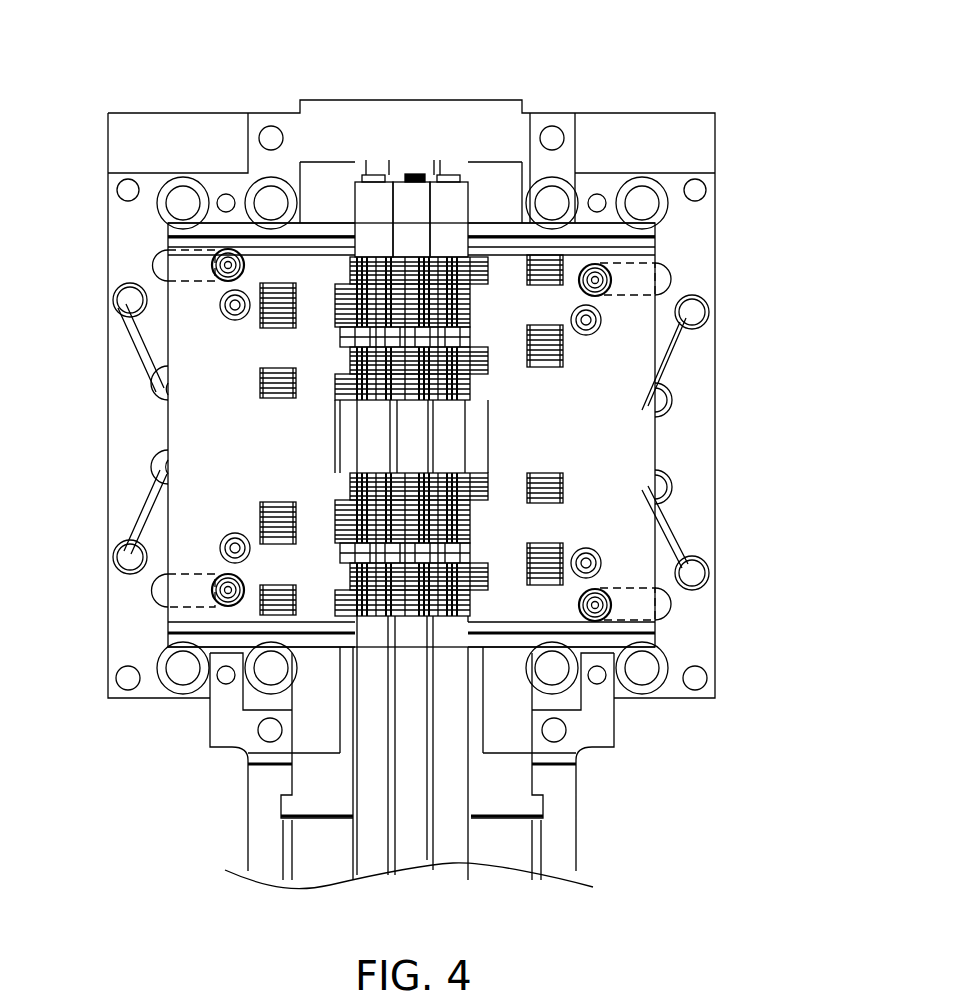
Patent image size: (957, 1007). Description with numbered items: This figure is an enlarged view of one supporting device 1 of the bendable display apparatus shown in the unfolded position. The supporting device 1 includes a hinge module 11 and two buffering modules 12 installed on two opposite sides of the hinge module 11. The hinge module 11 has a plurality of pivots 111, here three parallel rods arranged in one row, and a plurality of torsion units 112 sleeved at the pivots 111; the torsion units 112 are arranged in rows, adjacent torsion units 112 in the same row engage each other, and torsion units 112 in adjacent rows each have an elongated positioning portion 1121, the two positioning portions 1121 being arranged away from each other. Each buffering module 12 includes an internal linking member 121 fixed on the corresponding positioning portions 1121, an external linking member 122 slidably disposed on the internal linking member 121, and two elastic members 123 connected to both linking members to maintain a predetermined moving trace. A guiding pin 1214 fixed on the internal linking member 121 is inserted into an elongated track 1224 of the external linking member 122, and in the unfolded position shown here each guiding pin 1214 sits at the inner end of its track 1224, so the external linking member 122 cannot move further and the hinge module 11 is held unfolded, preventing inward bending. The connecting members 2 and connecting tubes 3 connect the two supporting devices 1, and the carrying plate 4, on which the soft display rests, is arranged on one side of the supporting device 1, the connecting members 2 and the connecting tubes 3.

The supporting device 1 is at (367, 438).
The hinge module 11 is at (440, 459).
The buffering module 12 is at (367, 390).
The pivot 111 is at (367, 200).
The torsion unit 112 is at (435, 517).
The positioning portion 1121 is at (276, 510).
The internal linking member 121 is at (182, 430).
The external linking member 122 is at (148, 180).
The track 1224 is at (162, 263).
The guiding pin 1214 is at (214, 277).
The elastic member 123 is at (140, 344).
The connecting member 2 is at (248, 803).
The connecting tube 3 is at (452, 855).
The carrying plate 4 is at (207, 118).